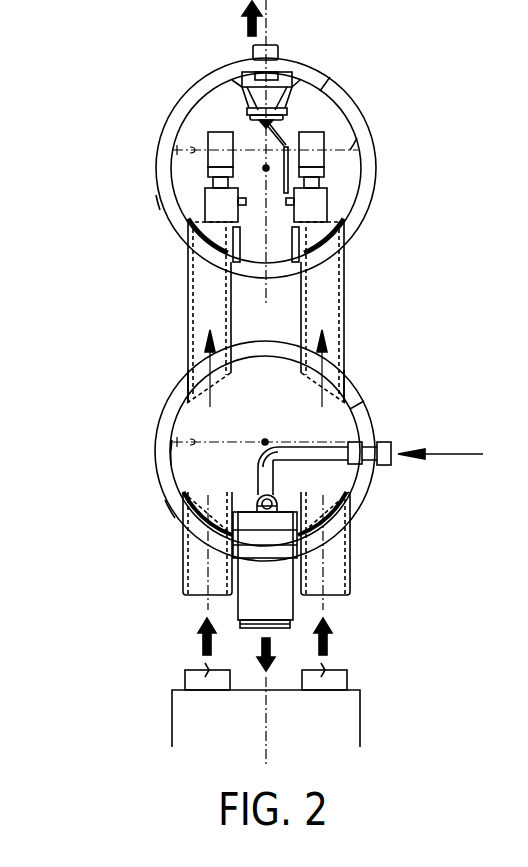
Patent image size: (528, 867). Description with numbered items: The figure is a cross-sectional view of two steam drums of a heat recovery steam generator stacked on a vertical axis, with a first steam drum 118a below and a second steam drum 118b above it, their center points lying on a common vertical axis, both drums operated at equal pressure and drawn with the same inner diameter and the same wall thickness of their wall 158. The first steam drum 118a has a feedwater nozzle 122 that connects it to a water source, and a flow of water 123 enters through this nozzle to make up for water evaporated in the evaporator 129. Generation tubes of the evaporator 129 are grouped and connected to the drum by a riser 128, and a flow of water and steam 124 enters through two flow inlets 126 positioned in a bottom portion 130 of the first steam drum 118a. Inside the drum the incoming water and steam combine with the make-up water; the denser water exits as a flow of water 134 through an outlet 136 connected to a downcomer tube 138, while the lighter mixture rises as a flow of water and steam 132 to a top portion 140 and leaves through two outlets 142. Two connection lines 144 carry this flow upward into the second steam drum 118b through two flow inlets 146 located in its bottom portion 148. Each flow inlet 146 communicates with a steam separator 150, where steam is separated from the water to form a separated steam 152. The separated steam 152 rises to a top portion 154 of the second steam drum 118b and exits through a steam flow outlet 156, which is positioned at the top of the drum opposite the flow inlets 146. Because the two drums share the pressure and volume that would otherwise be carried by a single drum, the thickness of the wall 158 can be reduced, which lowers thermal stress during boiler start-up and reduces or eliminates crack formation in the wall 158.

The first steam drum 118a is at (167, 505).
The second steam drum 118b is at (157, 199).
The feedwater nozzle 122 is at (383, 441).
The flow of water 123 is at (447, 453).
The flow of water and steam 124 is at (200, 643).
The flow inlet 126 is at (194, 496).
The riser 128 is at (183, 557).
The evaporator 129 is at (172, 716).
The bottom portion 130 is at (125, 549).
The flow of water and steam 132 is at (189, 374).
The flow of water 134 is at (265, 650).
The outlet 136 is at (258, 512).
The downcomer tube 138 is at (237, 609).
The top portion 140 is at (125, 397).
The outlet 142 is at (313, 383).
The connection line 144 is at (188, 272).
The flow inlet 146 is at (188, 216).
The bottom portion 148 is at (102, 172).
The steam separator 150 is at (236, 137).
The separated steam 152 is at (247, 23).
The top portion 154 is at (388, 89).
The steam flow outlet 156 is at (250, 53).
The wall 158 is at (362, 134).